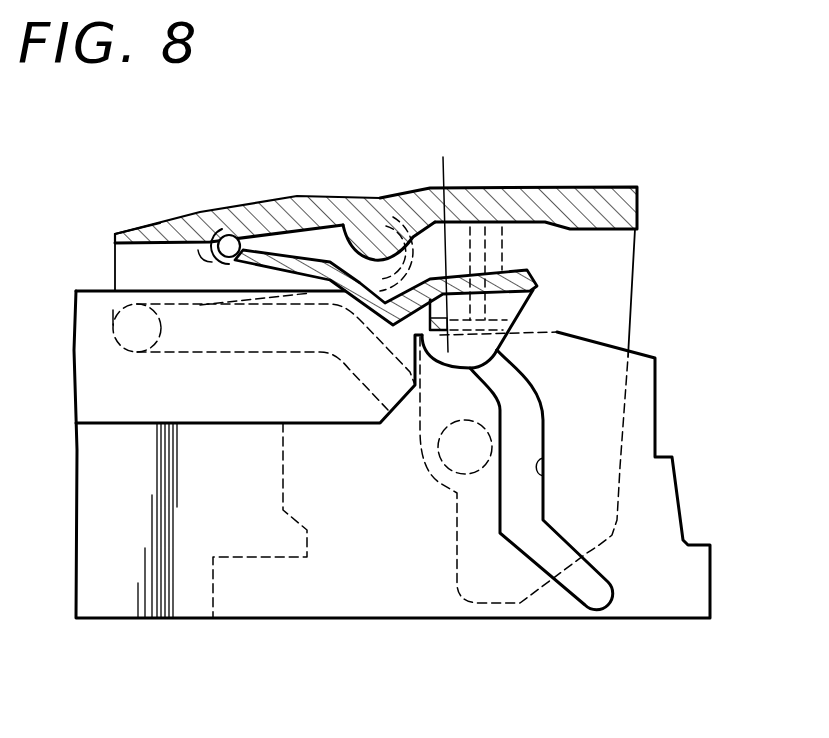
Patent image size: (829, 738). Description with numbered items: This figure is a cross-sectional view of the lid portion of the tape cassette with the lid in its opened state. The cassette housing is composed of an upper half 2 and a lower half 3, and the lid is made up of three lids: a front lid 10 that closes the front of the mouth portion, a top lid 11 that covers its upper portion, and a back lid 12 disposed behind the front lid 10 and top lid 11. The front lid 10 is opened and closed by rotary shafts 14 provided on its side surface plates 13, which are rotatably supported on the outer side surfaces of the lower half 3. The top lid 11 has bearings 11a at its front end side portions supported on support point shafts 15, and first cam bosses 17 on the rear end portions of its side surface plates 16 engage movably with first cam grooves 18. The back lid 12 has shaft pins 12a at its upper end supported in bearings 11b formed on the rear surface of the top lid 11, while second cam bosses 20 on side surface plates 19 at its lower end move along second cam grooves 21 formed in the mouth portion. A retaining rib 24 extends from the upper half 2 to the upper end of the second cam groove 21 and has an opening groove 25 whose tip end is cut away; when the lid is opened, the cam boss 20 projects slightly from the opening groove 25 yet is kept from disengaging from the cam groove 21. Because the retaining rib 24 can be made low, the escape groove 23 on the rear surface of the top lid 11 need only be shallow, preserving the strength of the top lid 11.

The upper half 2 is at (77, 377).
The lower half 3 is at (150, 619).
The front lid 10 is at (608, 190).
The top lid 11 is at (267, 210).
The bearing 11a is at (373, 197).
The bearing 11b is at (188, 218).
The back lid 12 is at (514, 271).
The shaft pin 12a is at (222, 236).
The side surface plate 13 is at (630, 247).
The rotary shaft 14 is at (462, 452).
The support point shaft 15 is at (396, 240).
The side surface plate 16 is at (125, 267).
The first cam boss 17 is at (113, 317).
The first cam groove 18 is at (236, 353).
The side surface plate 19 is at (538, 297).
The second cam boss 20 is at (503, 353).
The second cam groove 21 is at (547, 477).
The escape groove 23 is at (490, 320).
The retaining rib 24 is at (441, 240).
The opening groove 25 is at (477, 215).